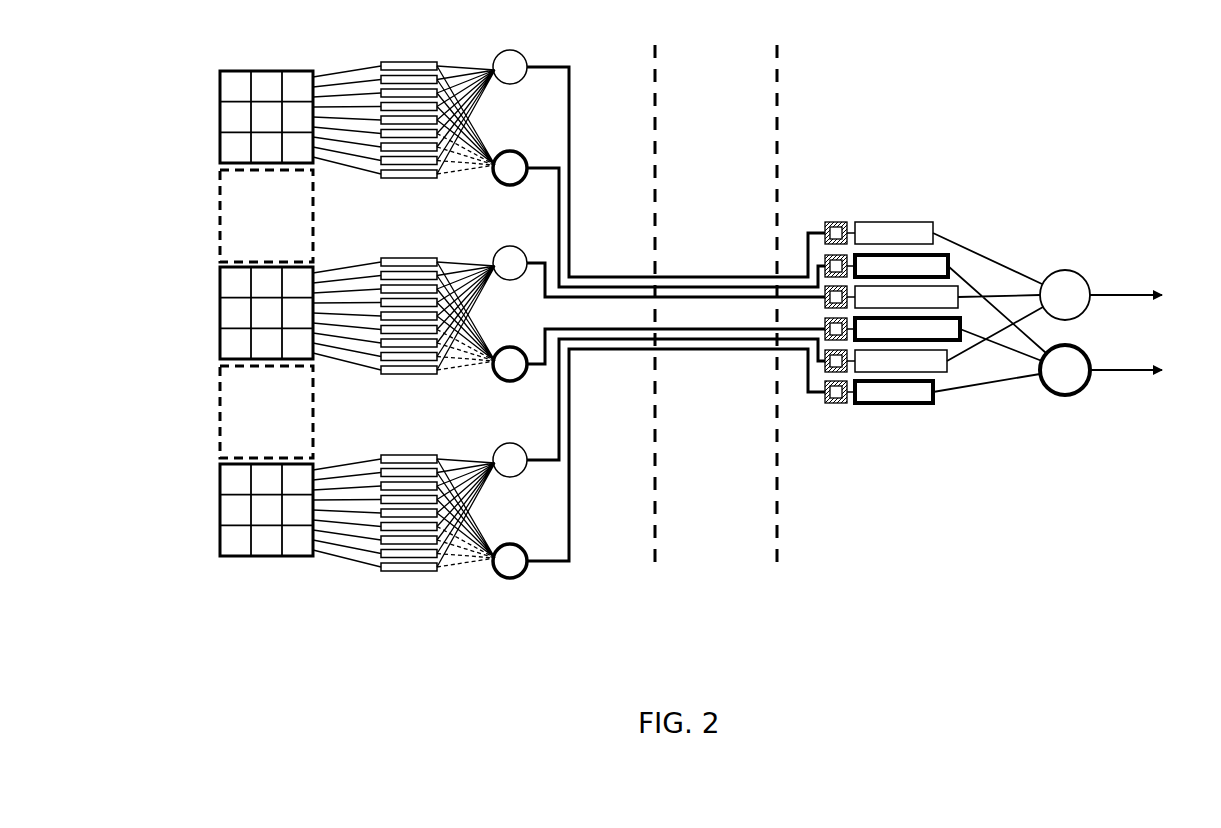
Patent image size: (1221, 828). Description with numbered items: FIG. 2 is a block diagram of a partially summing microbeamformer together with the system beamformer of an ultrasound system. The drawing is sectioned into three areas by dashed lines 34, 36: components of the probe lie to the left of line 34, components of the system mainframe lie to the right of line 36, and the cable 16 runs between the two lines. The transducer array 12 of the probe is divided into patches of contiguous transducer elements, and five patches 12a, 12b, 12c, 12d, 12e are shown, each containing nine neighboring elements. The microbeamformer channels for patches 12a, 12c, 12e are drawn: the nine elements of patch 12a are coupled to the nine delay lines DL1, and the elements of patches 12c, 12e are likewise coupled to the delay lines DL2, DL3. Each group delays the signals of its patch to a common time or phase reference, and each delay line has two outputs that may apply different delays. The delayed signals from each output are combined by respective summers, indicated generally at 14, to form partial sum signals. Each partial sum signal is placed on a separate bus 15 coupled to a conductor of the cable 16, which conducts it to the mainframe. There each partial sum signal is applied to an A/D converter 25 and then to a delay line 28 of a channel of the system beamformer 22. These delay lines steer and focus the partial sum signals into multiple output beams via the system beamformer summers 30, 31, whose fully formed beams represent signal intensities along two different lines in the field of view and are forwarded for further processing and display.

The transducer array 12 is at (284, 49).
The patch 12a is at (215, 110).
The patch 12b is at (215, 202).
The patch 12c is at (215, 305).
The patch 12d is at (215, 403).
The patch 12e is at (215, 505).
The delay lines DL1 is at (396, 53).
The delay lines DL2 is at (401, 249).
The delay lines DL3 is at (405, 447).
The summing circuits 14 is at (487, 47).
The bus 15 is at (610, 101).
The cable 16 is at (717, 264).
The system beamformer 22 is at (1025, 219).
The A/D converter 25 is at (840, 222).
The delay line 28 is at (958, 215).
The system beamformer summer 30 is at (1066, 278).
The system beamformer summer 31 is at (1070, 395).
The dashed line 34 is at (655, 47).
The dashed line 36 is at (777, 50).